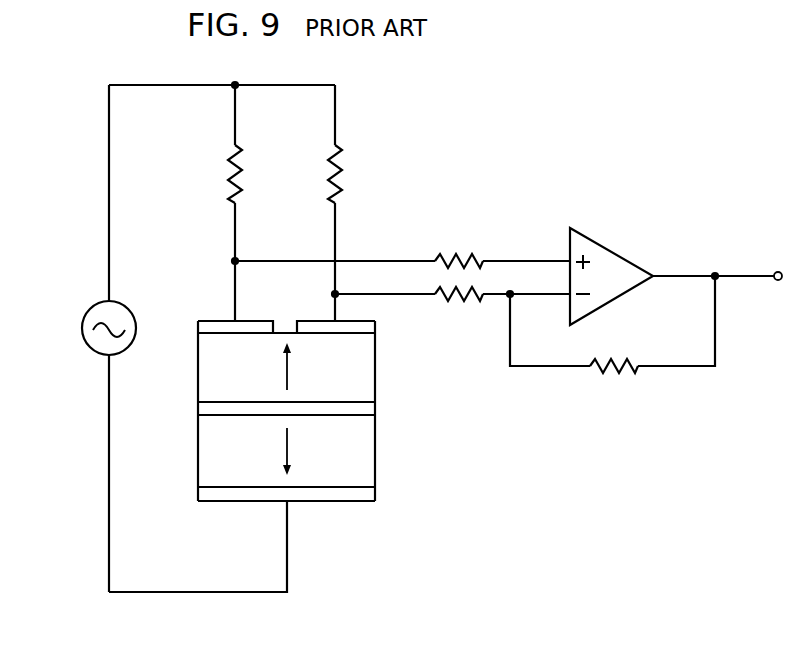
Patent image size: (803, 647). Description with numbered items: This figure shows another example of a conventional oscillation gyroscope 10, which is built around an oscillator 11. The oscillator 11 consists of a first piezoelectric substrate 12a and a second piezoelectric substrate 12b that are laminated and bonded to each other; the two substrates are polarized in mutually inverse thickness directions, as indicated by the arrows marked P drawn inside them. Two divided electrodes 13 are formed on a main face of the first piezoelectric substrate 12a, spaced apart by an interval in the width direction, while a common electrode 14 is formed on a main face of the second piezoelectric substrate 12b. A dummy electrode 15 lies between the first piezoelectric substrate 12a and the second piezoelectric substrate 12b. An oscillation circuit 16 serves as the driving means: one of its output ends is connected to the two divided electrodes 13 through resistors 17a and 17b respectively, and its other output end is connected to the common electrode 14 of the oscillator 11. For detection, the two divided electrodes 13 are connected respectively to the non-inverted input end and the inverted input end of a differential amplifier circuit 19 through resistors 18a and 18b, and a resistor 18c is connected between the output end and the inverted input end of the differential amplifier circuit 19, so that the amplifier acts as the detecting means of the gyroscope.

The oscillation gyroscope 10 is at (603, 88).
The oscillator 11 is at (350, 512).
The first piezoelectric substrate 12a is at (363, 374).
The second piezoelectric substrate 12b is at (365, 457).
The divided electrodes 13 is at (215, 325).
The common electrode 14 is at (373, 493).
The dummy electrode 15 is at (373, 407).
The oscillation circuit 16 is at (85, 310).
The resistor 17a is at (228, 180).
The resistor 17b is at (347, 170).
The resistor 18a is at (474, 252).
The resistor 18b is at (466, 300).
The resistor 18c is at (620, 375).
The differential amplifier circuit 19 is at (628, 260).